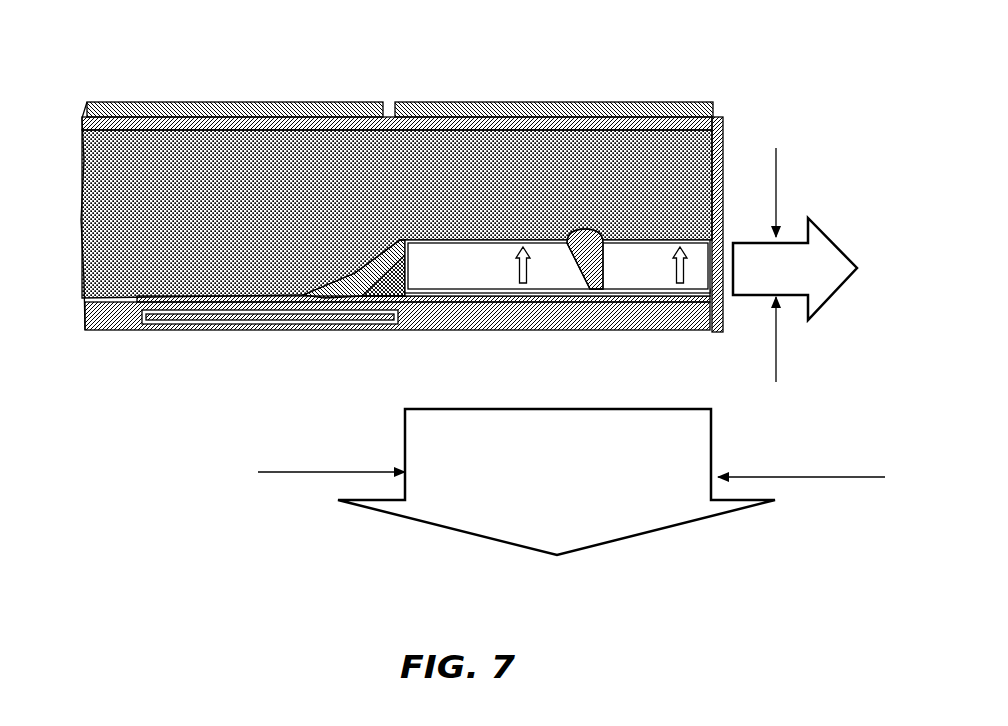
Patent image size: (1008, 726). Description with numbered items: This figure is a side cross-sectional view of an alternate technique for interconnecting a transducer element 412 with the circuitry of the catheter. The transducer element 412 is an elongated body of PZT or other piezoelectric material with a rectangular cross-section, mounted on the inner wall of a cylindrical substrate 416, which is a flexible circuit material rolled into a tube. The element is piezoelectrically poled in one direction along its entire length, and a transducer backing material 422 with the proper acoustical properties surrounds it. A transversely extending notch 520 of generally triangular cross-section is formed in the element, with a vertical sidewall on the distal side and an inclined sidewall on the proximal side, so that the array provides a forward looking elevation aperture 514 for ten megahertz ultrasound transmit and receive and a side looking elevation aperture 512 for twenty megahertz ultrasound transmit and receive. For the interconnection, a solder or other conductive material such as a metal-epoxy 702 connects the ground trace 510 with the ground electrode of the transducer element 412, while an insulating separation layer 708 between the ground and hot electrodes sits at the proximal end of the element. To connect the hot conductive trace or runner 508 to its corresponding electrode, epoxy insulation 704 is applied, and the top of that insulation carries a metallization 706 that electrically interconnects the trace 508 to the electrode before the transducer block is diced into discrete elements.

The cylindrical substrate 416 is at (83, 318).
The trace 508 is at (140, 303).
The ground trace 510 is at (223, 313).
The transducer backing material 422 is at (213, 262).
The metallization 706 is at (367, 278).
The epoxy insulation 704 is at (395, 297).
The metal-epoxy 702 is at (402, 243).
The transducer element 412 is at (557, 262).
The insulating separation layer 708 is at (408, 260).
The notch 520 is at (590, 253).
The forward looking elevation aperture 514 is at (792, 255).
The side looking elevation aperture 512 is at (603, 528).